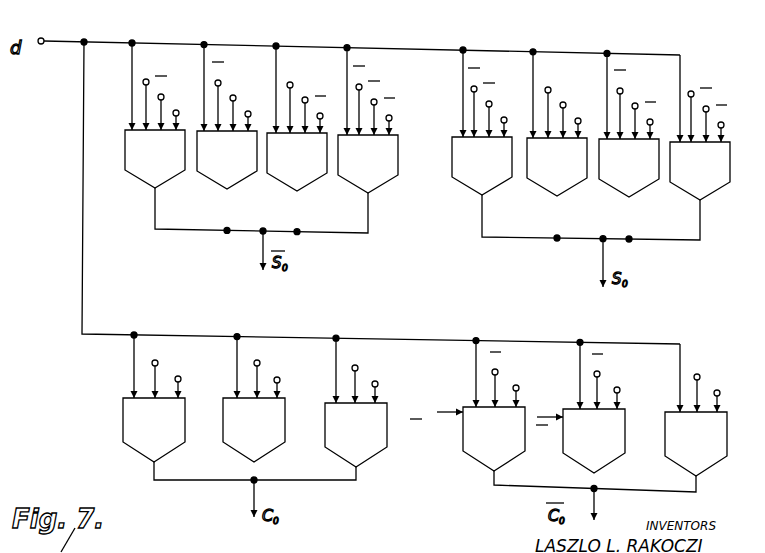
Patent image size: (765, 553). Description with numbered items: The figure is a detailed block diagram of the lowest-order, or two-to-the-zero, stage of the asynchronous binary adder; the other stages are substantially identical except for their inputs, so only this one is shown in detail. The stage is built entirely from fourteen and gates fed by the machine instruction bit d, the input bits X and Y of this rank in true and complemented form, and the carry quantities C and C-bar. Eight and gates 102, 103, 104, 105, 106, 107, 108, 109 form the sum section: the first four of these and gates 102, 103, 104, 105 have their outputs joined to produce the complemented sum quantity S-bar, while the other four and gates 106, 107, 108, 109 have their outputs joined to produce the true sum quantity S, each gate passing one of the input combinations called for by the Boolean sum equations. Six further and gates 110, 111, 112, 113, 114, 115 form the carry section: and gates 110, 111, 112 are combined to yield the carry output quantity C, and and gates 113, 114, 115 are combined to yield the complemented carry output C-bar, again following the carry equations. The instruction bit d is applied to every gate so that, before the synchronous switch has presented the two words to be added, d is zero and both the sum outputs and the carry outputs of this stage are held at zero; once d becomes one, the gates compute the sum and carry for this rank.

The and gate 102 is at (142, 172).
The and gate 103 is at (213, 172).
The and gate 104 is at (287, 172).
The and gate 105 is at (357, 192).
The and gate 106 is at (475, 187).
The and gate 107 is at (550, 187).
The and gate 108 is at (616, 183).
The and gate 109 is at (693, 183).
The and gate 110 is at (140, 447).
The and gate 111 is at (242, 447).
The and gate 112 is at (342, 450).
The and gate 113 is at (485, 457).
The and gate 114 is at (580, 457).
The and gate 115 is at (681, 466).